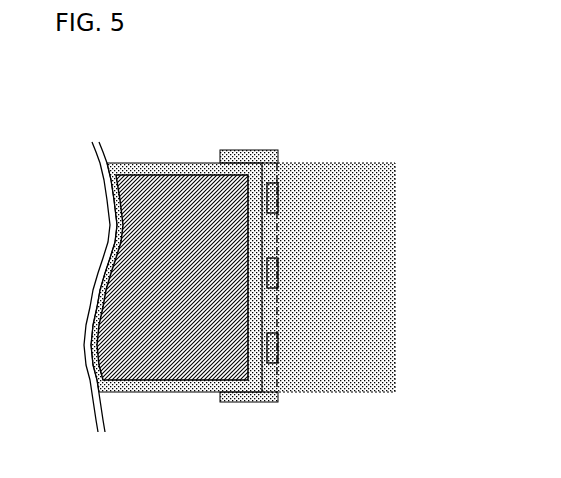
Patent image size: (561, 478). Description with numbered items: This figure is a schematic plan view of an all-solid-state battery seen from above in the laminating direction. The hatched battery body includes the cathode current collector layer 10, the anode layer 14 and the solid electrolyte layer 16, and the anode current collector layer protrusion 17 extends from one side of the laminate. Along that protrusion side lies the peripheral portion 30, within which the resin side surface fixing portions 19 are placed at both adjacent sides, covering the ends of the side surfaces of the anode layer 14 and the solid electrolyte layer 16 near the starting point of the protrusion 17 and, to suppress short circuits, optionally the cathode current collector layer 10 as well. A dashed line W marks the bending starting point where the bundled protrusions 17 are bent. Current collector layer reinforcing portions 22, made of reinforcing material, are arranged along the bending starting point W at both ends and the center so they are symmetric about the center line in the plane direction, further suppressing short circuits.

The cathode current collector layer 10 is at (153, 207).
The anode layer 14 is at (173, 295).
The solid electrolyte layer 16 is at (143, 392).
The anode current collector layer protrusion 17 is at (383, 205).
The side surface fixing portion 19 is at (270, 158).
The current collector layer reinforcing portion 22 is at (272, 195).
The peripheral portion 30 is at (285, 102).
The bending starting point W is at (283, 370).